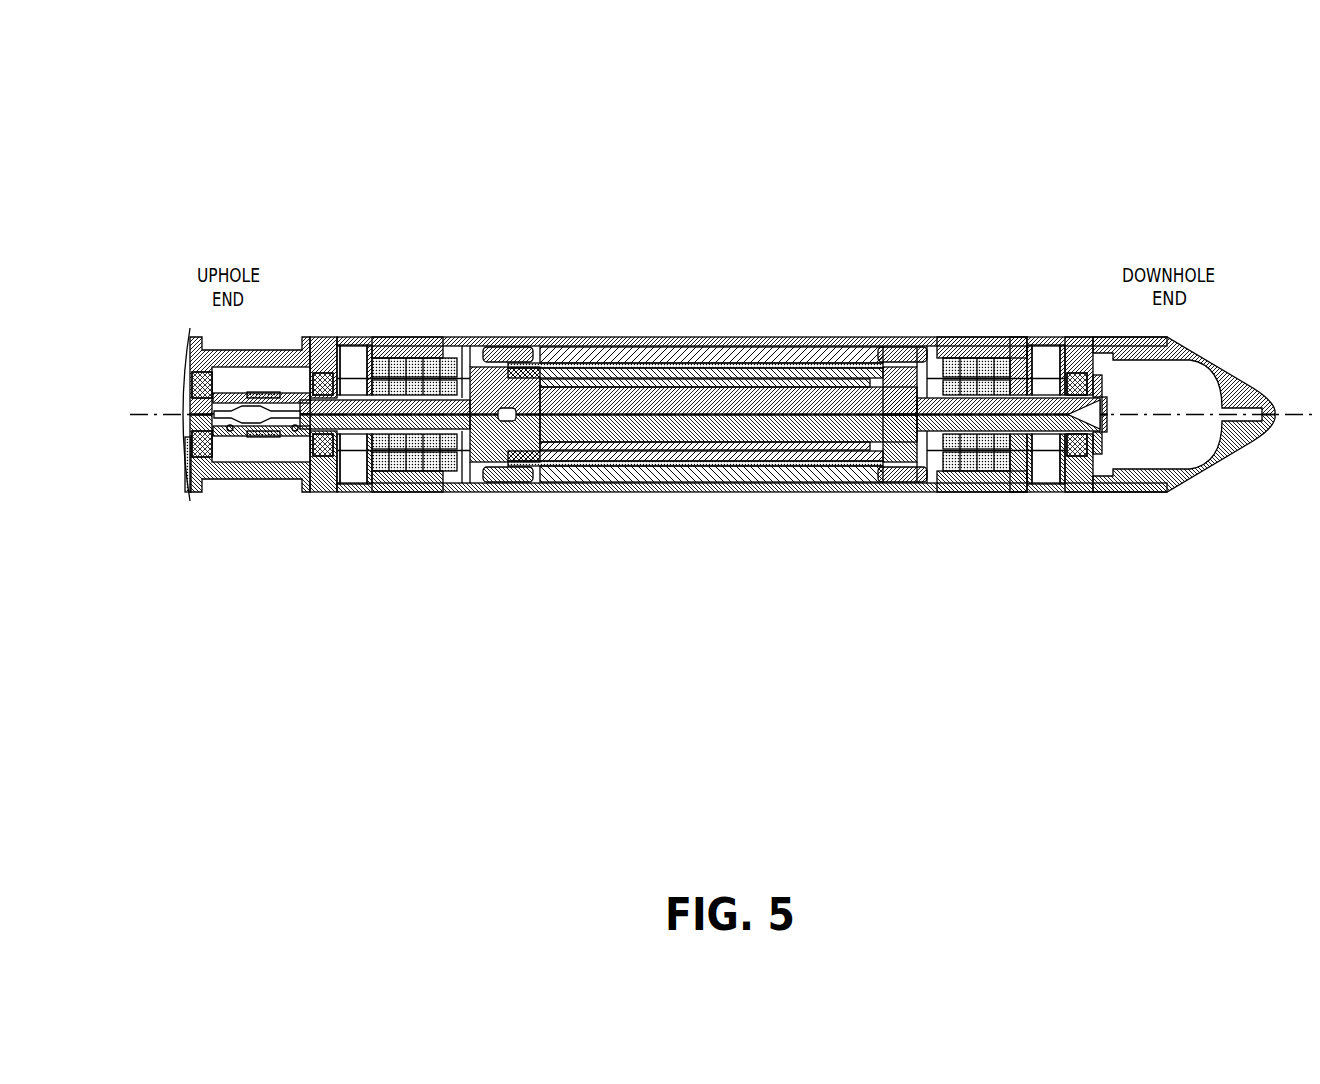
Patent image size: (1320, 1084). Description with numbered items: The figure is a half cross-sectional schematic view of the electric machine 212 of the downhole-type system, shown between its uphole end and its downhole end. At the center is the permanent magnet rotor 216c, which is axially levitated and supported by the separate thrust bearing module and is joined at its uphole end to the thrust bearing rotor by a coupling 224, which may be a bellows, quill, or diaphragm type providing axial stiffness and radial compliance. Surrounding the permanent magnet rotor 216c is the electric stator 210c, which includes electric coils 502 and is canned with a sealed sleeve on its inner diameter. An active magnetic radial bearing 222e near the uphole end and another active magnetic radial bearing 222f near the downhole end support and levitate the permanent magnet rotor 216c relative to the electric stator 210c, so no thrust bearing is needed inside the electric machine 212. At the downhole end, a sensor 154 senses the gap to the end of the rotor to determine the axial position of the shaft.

The electric machine 212 is at (601, 124).
The electric stator 210c is at (680, 350).
The permanent magnet rotor 216c is at (997, 417).
The active magnetic radial bearing 222e is at (422, 357).
The active magnetic radial bearing 222f is at (988, 357).
The coupling 224 is at (258, 437).
The sensor 154 is at (1108, 430).
The electric coils 502 is at (873, 480).